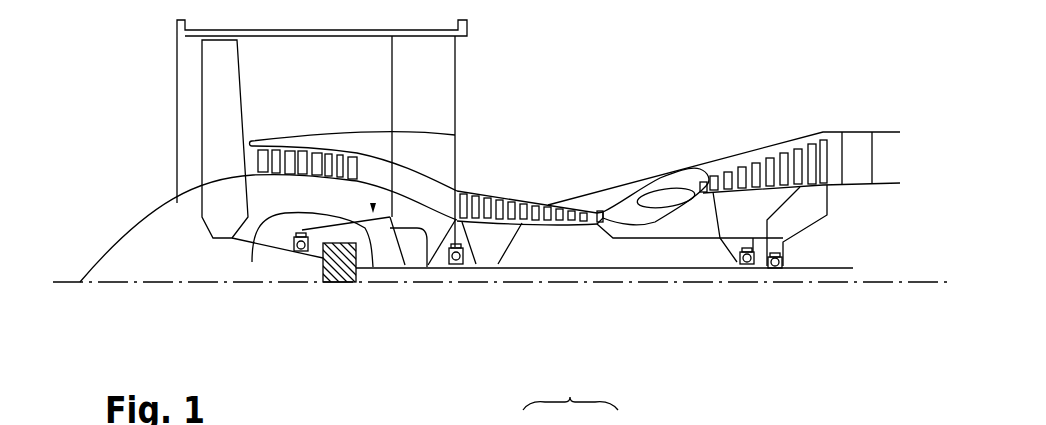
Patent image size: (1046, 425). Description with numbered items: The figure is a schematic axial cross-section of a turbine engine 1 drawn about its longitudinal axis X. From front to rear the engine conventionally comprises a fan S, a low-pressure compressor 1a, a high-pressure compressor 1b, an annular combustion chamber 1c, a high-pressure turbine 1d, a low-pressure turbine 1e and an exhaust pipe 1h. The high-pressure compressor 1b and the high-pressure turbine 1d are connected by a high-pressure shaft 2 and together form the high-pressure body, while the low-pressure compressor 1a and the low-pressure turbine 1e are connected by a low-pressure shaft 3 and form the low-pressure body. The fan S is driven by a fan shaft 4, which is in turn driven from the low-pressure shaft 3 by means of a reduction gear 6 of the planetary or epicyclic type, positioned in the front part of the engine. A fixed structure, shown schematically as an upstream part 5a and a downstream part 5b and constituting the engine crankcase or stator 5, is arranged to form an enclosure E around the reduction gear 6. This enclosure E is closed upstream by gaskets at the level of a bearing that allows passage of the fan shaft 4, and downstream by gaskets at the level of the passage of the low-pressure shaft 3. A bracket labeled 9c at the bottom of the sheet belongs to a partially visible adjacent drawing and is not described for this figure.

The turbine engine 1 is at (578, 106).
The low-pressure compressor 1a is at (277, 140).
The high-pressure compressor 1b is at (490, 200).
The annular combustion chamber 1c is at (653, 200).
The high-pressure turbine 1d is at (707, 180).
The low-pressure turbine 1e is at (827, 150).
The exhaust pipe 1h is at (885, 153).
The fan S is at (215, 90).
The longitudinal axis X is at (63, 283).
The high-pressure shaft 2 is at (650, 238).
The low-pressure shaft 3 is at (555, 268).
The fan shaft 4 is at (284, 257).
The stator 5 is at (373, 205).
The upstream part 5a is at (255, 232).
The downstream part 5b is at (423, 268).
The reduction gear 6 is at (332, 262).
The enclosure E is at (370, 232).
The seal assembly 9c is at (570, 400).